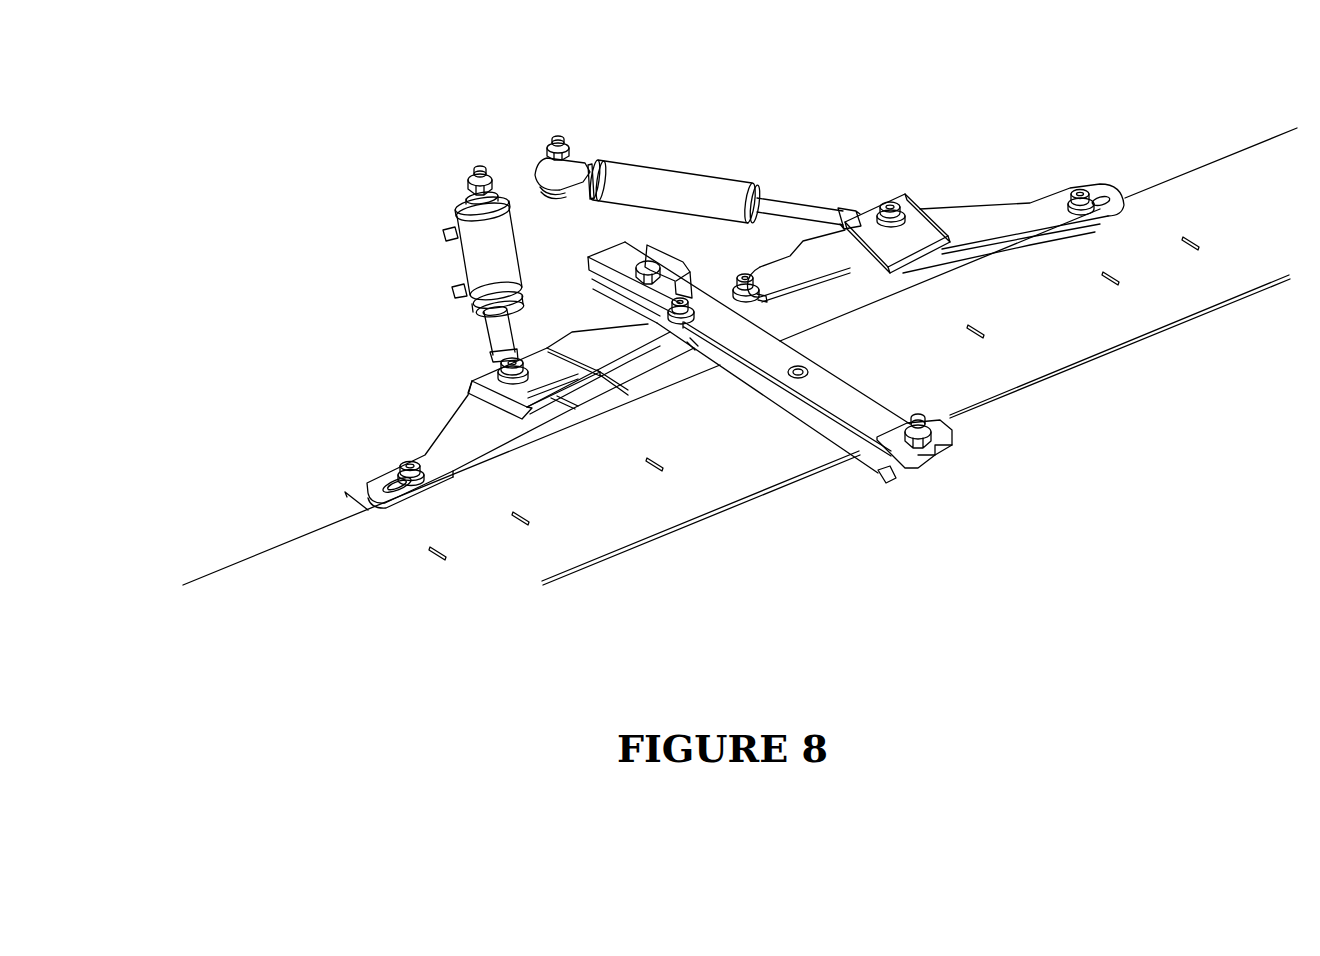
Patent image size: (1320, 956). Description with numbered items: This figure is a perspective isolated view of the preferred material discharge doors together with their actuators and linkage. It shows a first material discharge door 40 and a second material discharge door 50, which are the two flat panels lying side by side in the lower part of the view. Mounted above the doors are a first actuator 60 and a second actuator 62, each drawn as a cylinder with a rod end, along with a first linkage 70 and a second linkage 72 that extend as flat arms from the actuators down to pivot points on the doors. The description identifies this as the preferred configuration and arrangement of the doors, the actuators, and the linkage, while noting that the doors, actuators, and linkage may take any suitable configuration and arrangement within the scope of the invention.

The first material discharge door 40 is at (683, 533).
The second material discharge door 50 is at (1140, 340).
The first actuator 60 is at (460, 263).
The second actuator 62 is at (752, 182).
The first linkage 70 is at (455, 402).
The second linkage 72 is at (950, 208).